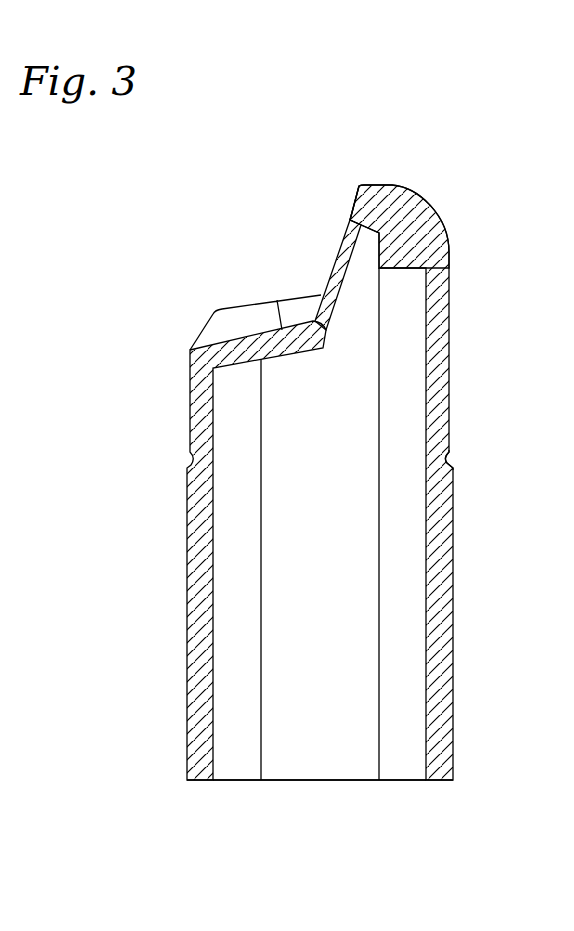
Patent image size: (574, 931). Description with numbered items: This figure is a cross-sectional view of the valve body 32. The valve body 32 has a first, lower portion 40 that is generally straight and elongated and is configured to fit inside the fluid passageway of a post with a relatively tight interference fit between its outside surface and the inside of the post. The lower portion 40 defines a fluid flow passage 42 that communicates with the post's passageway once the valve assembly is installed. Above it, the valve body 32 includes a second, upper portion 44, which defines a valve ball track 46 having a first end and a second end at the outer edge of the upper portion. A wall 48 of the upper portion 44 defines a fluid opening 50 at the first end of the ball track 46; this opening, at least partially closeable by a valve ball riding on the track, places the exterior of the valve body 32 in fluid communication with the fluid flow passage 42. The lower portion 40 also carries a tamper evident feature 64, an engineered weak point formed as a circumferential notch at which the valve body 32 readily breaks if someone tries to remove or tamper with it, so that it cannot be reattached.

The valve body 32 is at (467, 390).
The first, lower portion 40 is at (455, 575).
The fluid flow passage 42 is at (315, 770).
The second, upper portion 44 is at (425, 198).
The valve ball track 46 is at (250, 328).
The wall 48 is at (356, 203).
The fluid opening 50 is at (335, 267).
The tamper evident feature 64 is at (446, 456).